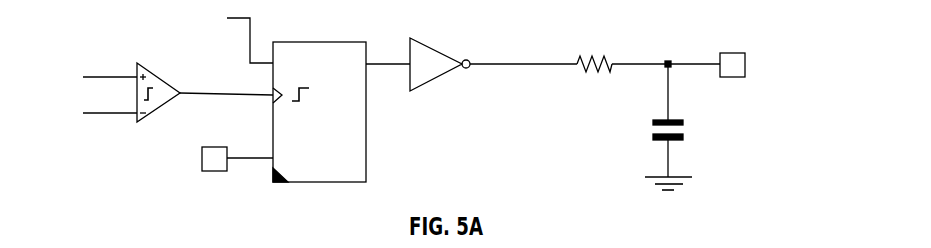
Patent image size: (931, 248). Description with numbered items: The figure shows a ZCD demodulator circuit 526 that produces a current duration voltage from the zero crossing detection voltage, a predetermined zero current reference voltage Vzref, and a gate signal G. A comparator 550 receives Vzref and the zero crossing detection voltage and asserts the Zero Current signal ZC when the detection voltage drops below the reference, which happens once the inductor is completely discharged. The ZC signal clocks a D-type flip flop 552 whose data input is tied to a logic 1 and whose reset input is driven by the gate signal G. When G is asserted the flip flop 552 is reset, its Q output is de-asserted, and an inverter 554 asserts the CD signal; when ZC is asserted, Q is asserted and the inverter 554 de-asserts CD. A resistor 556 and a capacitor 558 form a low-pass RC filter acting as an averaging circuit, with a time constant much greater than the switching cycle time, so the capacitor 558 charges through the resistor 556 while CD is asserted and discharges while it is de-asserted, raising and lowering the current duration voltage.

The ZCD demodulator circuit 526 is at (508, 198).
The comparator 550 is at (154, 72).
The D-type flip flop 552 is at (367, 139).
The inverter 554 is at (421, 40).
The resistor 556 is at (588, 71).
The capacitor 558 is at (653, 123).
The logic high input 1 is at (240, 35).